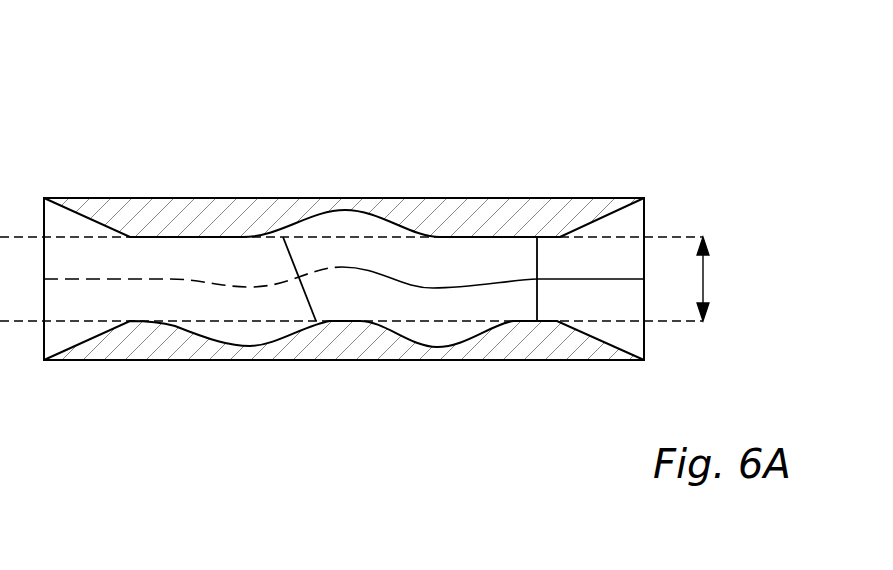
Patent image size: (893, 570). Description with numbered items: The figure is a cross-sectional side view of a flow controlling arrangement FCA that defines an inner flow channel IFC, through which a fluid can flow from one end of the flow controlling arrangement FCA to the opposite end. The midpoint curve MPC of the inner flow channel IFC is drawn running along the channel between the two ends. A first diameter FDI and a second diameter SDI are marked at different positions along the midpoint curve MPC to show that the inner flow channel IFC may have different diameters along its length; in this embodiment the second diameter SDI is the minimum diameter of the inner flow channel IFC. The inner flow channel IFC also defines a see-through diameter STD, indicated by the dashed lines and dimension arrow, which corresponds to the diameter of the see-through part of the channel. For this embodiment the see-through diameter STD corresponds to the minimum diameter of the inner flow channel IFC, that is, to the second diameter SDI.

The flow controlling arrangement FCA is at (165, 198).
The inner flow channel IFC is at (457, 260).
The midpoint curve MPC is at (175, 281).
The first diameter FDI is at (316, 323).
The second diameter SDI is at (537, 302).
The see-through diameter STD is at (387, 279).